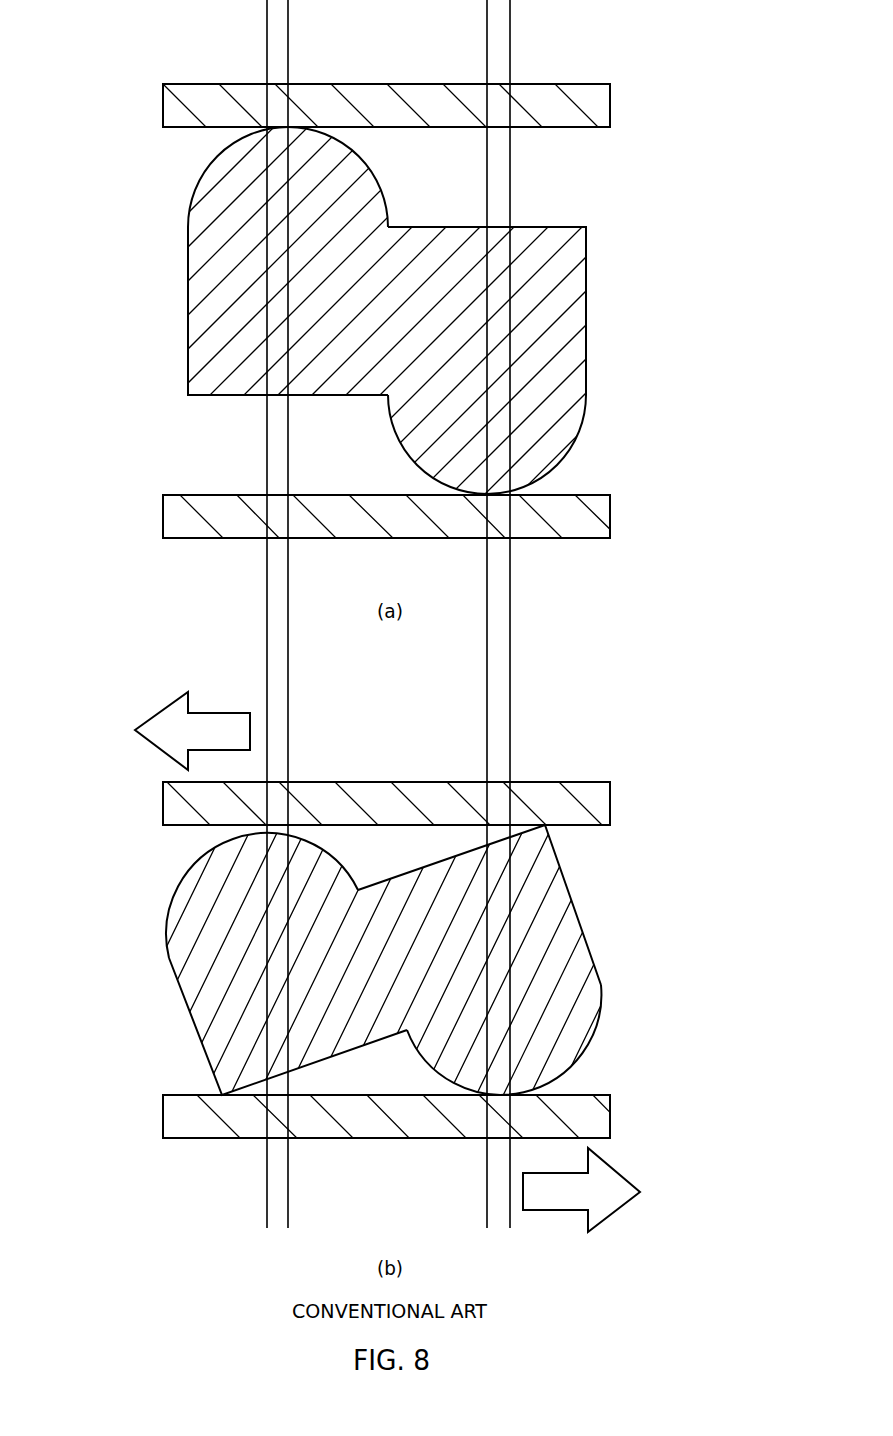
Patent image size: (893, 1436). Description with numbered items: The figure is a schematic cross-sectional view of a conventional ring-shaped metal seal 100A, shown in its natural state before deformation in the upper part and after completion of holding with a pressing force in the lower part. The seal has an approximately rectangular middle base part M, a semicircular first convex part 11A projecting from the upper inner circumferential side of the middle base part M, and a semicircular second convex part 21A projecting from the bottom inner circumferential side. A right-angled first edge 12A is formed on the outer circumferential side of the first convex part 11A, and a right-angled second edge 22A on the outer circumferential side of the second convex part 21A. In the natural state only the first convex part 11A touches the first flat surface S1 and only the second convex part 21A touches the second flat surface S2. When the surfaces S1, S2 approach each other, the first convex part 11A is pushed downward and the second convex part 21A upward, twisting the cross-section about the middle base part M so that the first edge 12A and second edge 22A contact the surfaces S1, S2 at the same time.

The metal seal 100A is at (446, 611).
The middle base part M is at (446, 611).
The first convex part 11A is at (304, 112).
The first edge 12A is at (590, 228).
The second convex part 21A is at (531, 506).
The second edge 22A is at (188, 395).
The first flat surface S1 is at (581, 128).
The second flat surface S2 is at (190, 495).